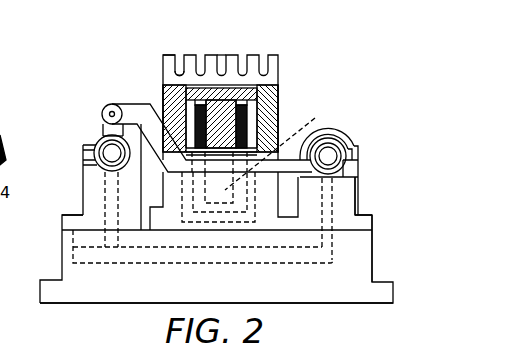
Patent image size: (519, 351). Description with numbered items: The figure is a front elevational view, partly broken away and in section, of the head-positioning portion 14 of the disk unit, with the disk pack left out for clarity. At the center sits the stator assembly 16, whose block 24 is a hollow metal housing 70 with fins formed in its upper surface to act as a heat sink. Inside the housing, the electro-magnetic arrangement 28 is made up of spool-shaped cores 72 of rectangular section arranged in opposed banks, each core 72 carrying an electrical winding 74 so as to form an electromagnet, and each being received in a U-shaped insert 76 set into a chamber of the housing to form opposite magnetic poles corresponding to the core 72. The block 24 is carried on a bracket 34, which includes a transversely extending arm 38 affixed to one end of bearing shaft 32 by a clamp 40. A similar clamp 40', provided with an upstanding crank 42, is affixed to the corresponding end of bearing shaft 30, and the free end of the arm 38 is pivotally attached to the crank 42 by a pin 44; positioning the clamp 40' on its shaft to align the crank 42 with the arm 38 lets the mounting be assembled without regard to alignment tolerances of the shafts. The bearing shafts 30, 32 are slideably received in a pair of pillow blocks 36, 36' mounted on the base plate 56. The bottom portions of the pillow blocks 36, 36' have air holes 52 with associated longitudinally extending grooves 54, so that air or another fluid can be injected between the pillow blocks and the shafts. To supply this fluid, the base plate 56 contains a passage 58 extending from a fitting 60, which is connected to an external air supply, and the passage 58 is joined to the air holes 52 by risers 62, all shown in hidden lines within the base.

The head-positioning portion 14 is at (357, 126).
The stator assembly 16 is at (285, 62).
The block 24 is at (278, 118).
The electro-magnetic arrangement 28 is at (282, 105).
The bearing shaft 30 is at (88, 141).
The bearing shaft 32 is at (349, 143).
The bracket 34 is at (116, 102).
The pillow block 36 is at (206, 237).
The pillow block 36' is at (382, 229).
The transversely extending arm 38 is at (108, 104).
The clamp 40 is at (327, 129).
The clamp 40' is at (86, 125).
The crank 42 is at (106, 112).
The pin 44 is at (137, 103).
The air holes 52 is at (333, 184).
The grooves 54 is at (83, 171).
The base plate 56 is at (28, 313).
The passage 58 is at (100, 178).
The fitting 60 is at (70, 262).
The risers 62 is at (80, 194).
The hollow metal housing 70 is at (168, 54).
The spool-shaped core 72 is at (248, 90).
The electrical winding 74 is at (197, 88).
The U-shaped inserts 76 is at (221, 90).